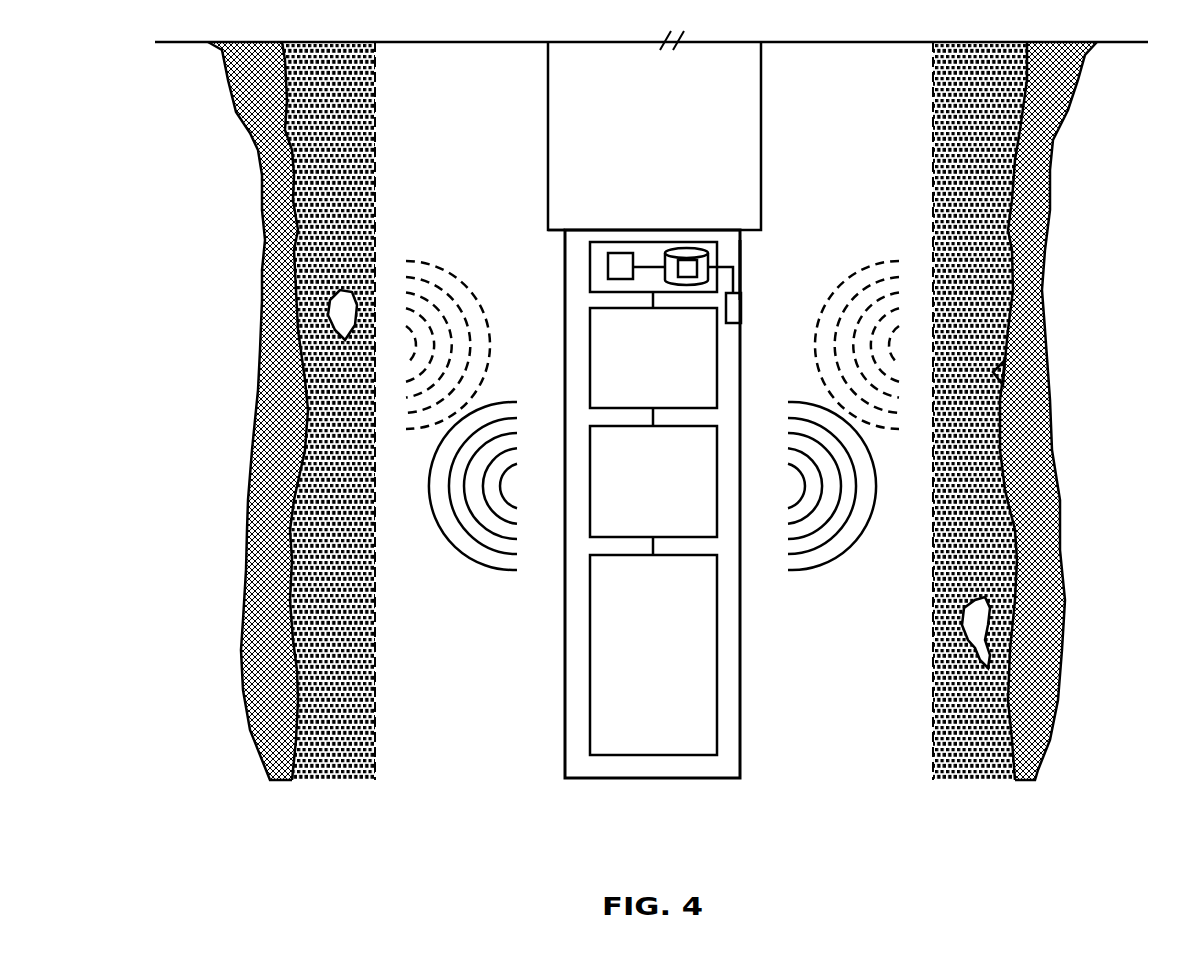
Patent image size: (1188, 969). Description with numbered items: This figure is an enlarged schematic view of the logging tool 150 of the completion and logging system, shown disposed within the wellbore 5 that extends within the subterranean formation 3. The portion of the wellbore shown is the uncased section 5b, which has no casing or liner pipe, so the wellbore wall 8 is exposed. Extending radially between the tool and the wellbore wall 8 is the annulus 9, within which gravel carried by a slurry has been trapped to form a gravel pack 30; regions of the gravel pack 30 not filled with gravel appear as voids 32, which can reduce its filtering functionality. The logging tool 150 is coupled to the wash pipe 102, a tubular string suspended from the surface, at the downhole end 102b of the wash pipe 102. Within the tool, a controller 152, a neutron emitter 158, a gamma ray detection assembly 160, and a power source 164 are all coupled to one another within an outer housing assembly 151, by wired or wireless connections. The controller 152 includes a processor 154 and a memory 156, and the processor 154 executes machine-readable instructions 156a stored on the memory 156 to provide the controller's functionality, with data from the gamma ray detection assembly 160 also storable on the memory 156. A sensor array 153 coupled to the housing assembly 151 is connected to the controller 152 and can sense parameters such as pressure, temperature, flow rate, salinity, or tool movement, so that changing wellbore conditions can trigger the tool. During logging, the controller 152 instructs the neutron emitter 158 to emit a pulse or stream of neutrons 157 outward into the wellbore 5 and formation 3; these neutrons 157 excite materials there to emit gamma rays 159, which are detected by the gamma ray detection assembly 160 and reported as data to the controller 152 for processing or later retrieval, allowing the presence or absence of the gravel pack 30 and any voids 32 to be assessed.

The subterranean formation 3 is at (1045, 492).
The wellbore 5 is at (392, 181).
The uncased section 5b is at (1038, 162).
The wellbore wall 8 is at (1002, 366).
The annulus 9 is at (985, 273).
The gravel pack 30 is at (307, 527).
The voids 32 is at (332, 300).
The wash pipe 102 is at (765, 98).
The downhole end 102b is at (545, 237).
The logging tool 150 is at (775, 732).
The outer housing assembly 151 is at (743, 259).
The controller 152 is at (590, 284).
The sensor array 153 is at (733, 326).
The processor 154 is at (615, 253).
The memory 156 is at (688, 244).
The machine-readable instructions 156a is at (668, 262).
The neutrons 157 is at (440, 527).
The neutron emitter 158 is at (590, 500).
The gamma rays 159 is at (406, 262).
The gamma ray detection assembly 160 is at (590, 341).
The power source 164 is at (590, 655).